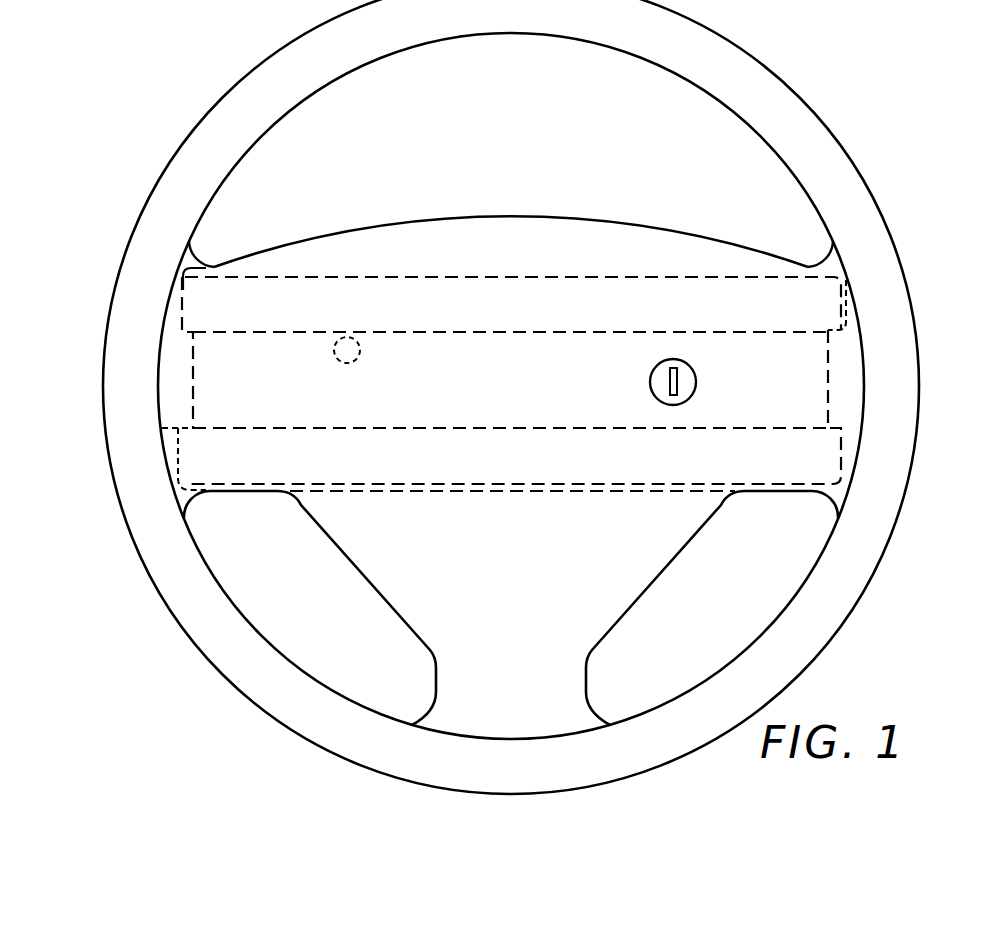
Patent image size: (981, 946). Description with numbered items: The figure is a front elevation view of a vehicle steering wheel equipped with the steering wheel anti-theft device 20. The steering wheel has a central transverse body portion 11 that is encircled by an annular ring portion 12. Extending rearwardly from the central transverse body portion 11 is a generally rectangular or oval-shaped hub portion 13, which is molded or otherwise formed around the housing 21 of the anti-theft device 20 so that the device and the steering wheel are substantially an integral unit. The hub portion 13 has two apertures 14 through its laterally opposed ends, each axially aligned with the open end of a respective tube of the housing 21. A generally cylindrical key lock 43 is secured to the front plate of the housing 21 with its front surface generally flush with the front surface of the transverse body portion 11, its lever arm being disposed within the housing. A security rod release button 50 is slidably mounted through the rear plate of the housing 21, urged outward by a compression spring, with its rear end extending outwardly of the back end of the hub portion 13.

The central transverse body portion 11 is at (473, 190).
The annular ring portion 12 is at (283, 48).
The hub portion 13 is at (299, 502).
The apertures 14 is at (858, 290).
The steering wheel anti-theft device 20 is at (583, 268).
The housing 21 is at (400, 268).
The key lock 43 is at (696, 380).
The security rod release button 50 is at (359, 352).